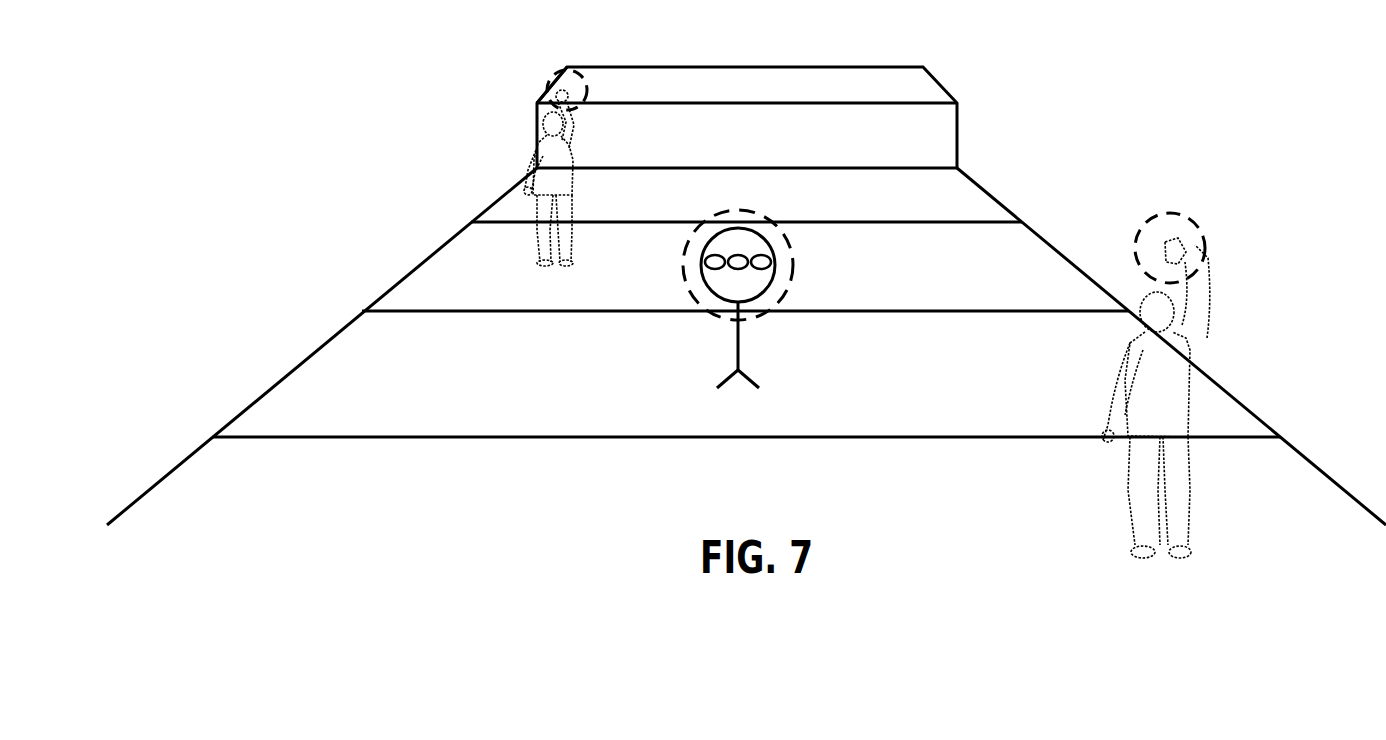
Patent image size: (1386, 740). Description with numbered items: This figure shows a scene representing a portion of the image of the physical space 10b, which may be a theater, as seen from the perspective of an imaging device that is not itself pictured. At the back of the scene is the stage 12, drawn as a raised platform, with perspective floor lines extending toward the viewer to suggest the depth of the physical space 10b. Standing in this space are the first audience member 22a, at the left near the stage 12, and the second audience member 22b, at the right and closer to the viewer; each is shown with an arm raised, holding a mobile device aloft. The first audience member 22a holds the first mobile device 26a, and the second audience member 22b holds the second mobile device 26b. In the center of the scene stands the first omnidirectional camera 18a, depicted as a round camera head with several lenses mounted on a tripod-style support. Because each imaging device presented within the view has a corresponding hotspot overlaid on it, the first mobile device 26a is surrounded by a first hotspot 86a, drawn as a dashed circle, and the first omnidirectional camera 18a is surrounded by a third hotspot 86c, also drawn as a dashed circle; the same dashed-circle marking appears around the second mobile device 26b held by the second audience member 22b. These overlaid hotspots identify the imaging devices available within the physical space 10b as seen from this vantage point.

The physical space 10b is at (1040, 235).
The stage 12 is at (758, 130).
The first omnidirectional camera 18a is at (736, 343).
The first audience member 22a is at (533, 157).
The second audience member 22b is at (1127, 358).
The first mobile device 26a is at (586, 93).
The second mobile device 26b is at (1196, 257).
The first hotspot 86a is at (548, 95).
The third hotspot 86c is at (685, 283).